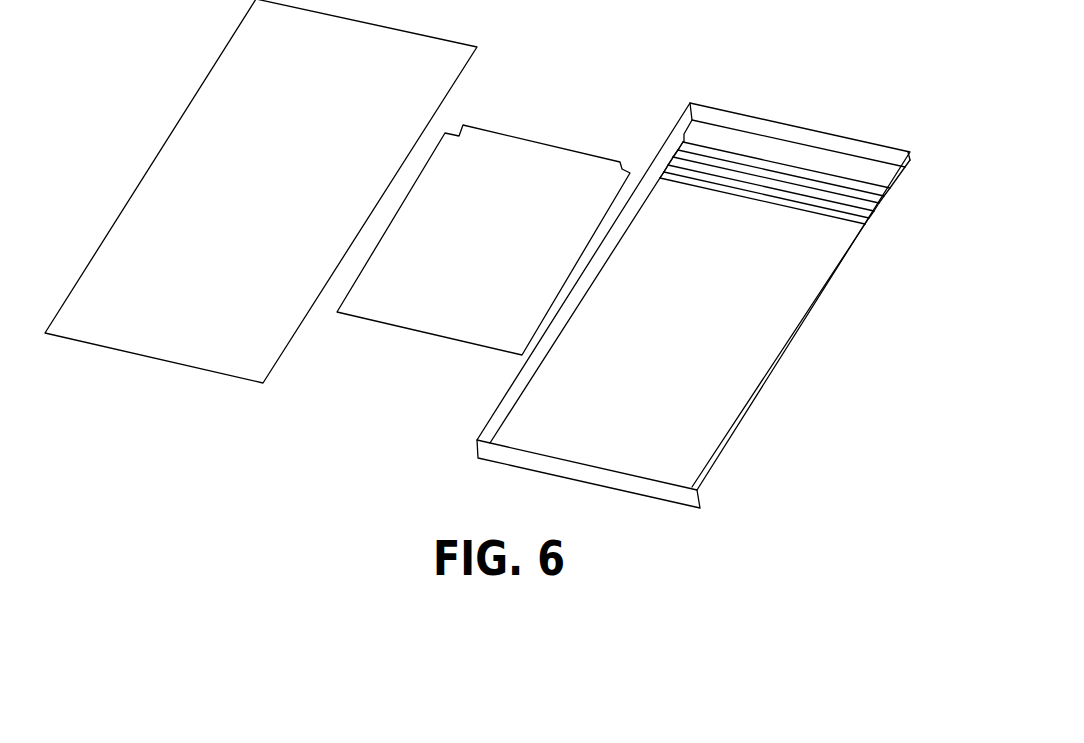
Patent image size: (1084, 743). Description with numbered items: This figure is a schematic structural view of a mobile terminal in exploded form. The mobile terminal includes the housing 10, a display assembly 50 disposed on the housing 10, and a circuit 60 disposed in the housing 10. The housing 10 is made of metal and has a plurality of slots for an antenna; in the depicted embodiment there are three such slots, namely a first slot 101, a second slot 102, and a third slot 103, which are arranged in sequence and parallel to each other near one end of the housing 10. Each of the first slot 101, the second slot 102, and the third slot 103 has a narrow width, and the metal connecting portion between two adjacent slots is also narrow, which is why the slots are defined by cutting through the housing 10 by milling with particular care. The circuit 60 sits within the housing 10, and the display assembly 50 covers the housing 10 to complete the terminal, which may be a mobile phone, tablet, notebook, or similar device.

The housing 10 is at (720, 305).
The first slot 101 is at (873, 187).
The second slot 102 is at (867, 203).
The third slot 103 is at (857, 217).
The display assembly 50 is at (385, 33).
The circuit 60 is at (500, 143).